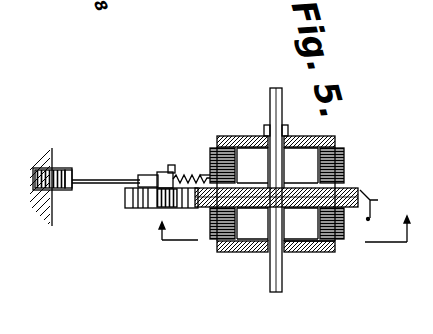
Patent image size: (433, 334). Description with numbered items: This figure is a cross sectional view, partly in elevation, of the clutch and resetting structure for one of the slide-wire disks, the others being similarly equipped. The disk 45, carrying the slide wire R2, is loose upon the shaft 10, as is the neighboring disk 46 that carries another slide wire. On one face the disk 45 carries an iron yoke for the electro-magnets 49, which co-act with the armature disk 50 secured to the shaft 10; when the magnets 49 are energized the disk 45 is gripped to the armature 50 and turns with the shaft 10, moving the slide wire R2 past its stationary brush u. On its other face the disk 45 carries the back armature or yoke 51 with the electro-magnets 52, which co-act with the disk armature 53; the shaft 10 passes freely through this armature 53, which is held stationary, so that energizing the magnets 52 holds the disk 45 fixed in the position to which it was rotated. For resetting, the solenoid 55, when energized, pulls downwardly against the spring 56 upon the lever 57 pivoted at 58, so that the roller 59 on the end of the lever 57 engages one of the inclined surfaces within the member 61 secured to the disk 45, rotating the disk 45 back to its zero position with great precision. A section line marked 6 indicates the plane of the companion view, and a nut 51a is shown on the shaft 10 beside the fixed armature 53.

The solenoid 55 is at (58, 197).
The lever 57 is at (153, 178).
The pivot 58 is at (170, 178).
The spring 56 is at (190, 180).
The disk 45 is at (202, 180).
The roller 59 is at (143, 210).
The member 61 is at (160, 212).
The slide wire R2 is at (192, 208).
The stationary brush u is at (377, 205).
The disk armature 53 is at (262, 135).
The electro-magnets 52 is at (236, 158).
The electro-magnets 49 is at (236, 222).
The back armature or yoke 51 is at (284, 158).
The disk 46 is at (285, 230).
The shaft 10 is at (273, 90).
The nut 51a is at (282, 128).
The armature disk 50 is at (300, 242).
The section line 6 is at (290, 240).